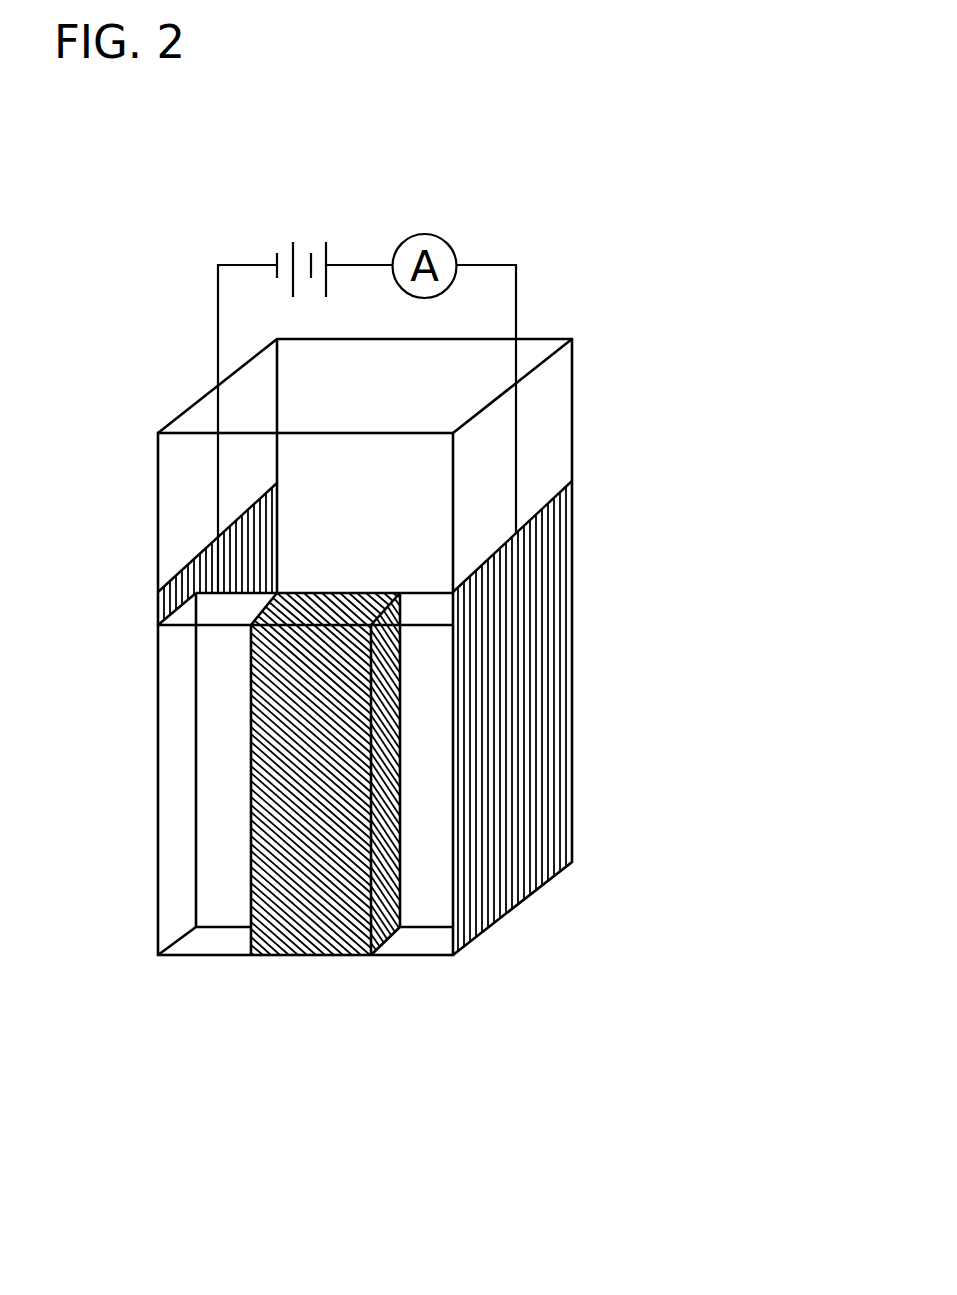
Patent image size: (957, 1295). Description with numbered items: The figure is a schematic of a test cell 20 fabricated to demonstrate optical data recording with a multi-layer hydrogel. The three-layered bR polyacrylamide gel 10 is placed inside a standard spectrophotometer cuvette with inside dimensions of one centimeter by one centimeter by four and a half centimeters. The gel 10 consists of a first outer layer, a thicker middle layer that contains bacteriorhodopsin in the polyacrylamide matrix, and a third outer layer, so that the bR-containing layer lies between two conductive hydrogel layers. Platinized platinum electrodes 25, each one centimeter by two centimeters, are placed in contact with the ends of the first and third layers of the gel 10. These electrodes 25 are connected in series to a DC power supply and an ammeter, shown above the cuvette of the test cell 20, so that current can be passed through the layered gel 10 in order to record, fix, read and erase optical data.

The three-layered polyacrylamide hydrogel 10 is at (183, 967).
The test cell 20 is at (580, 405).
The platinized platinum electrodes 25 is at (521, 765).